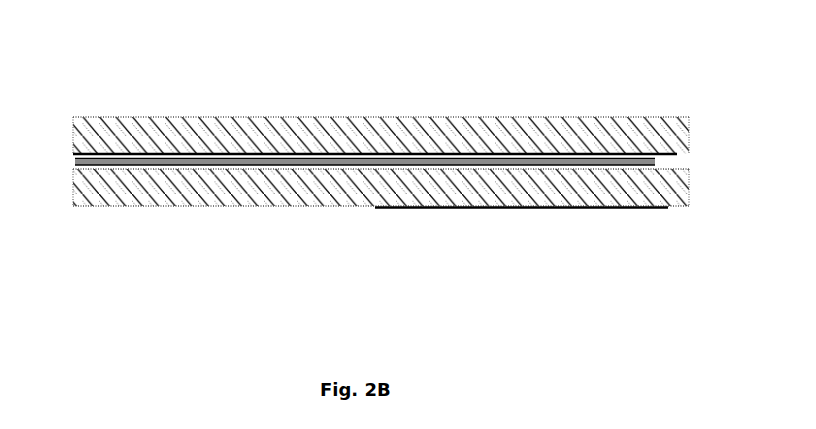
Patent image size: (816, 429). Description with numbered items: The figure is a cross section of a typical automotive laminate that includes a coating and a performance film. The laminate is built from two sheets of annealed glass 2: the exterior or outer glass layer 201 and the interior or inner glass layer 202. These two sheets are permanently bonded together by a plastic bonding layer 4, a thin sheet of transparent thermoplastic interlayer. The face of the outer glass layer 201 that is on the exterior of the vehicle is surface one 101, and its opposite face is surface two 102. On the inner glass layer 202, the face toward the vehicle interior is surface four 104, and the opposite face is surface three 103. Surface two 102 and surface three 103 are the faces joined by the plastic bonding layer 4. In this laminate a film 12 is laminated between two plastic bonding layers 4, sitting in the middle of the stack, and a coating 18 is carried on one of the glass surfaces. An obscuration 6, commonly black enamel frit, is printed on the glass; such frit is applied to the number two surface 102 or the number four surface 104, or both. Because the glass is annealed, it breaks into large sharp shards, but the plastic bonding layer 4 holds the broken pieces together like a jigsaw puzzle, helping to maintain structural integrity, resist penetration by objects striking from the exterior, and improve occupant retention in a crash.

The glass 2 is at (650, 114).
The outer glass layer 201 is at (66, 137).
The inner glass layer 202 is at (68, 192).
The surface one 101 is at (209, 113).
The surface two 102 is at (342, 148).
The surface three 103 is at (200, 174).
The surface four 104 is at (262, 209).
The plastic bonding layer 4 is at (124, 155).
The coating 18 is at (457, 152).
The film 12 is at (365, 171).
The obscuration 6 is at (489, 211).